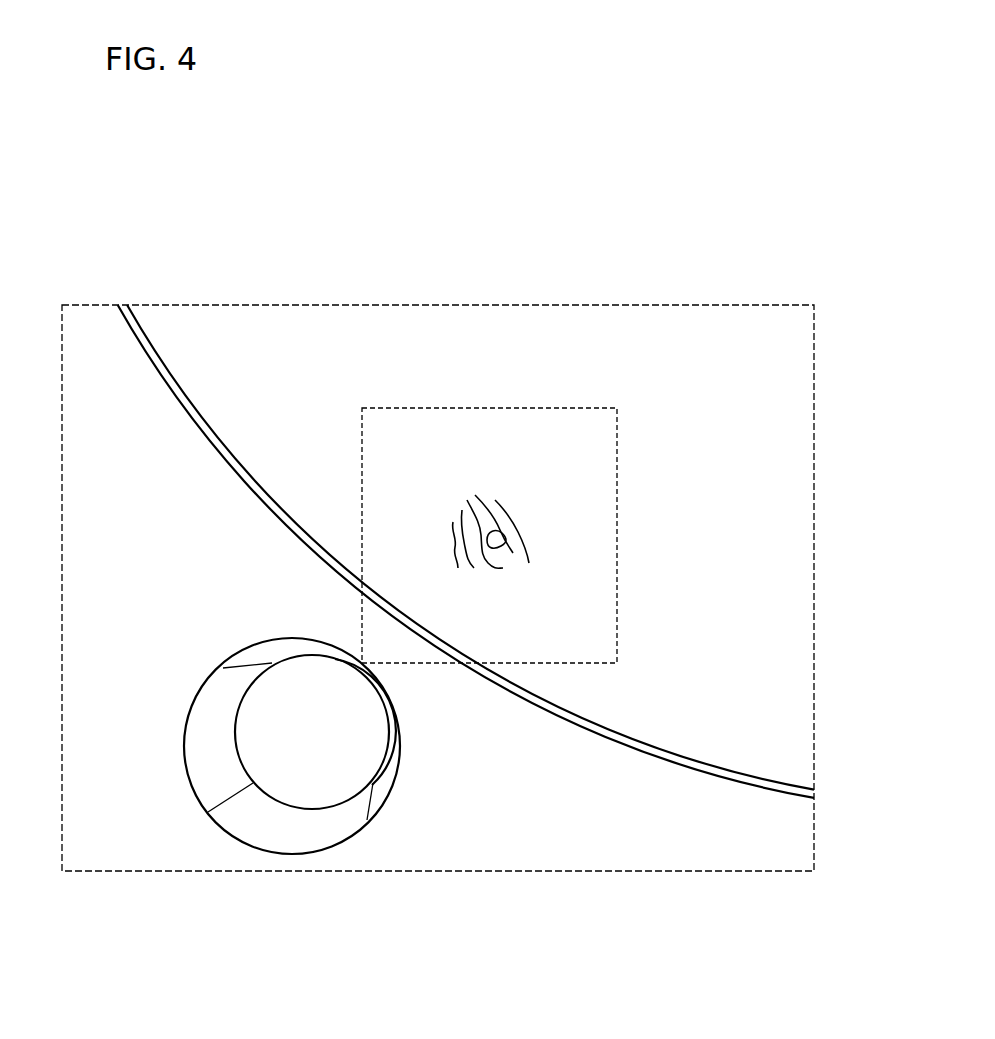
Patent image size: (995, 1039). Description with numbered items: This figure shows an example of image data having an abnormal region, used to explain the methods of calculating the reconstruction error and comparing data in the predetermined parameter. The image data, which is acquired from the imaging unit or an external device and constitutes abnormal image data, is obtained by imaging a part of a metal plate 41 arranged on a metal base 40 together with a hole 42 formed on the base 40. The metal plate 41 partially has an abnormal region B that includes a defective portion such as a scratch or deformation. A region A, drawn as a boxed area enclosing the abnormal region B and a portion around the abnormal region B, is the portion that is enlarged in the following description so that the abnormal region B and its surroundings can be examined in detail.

The metal base 40 is at (481, 830).
The metal plate 41 is at (690, 328).
The hole 42 is at (360, 827).
The region A is at (579, 408).
The abnormal region B is at (465, 486).